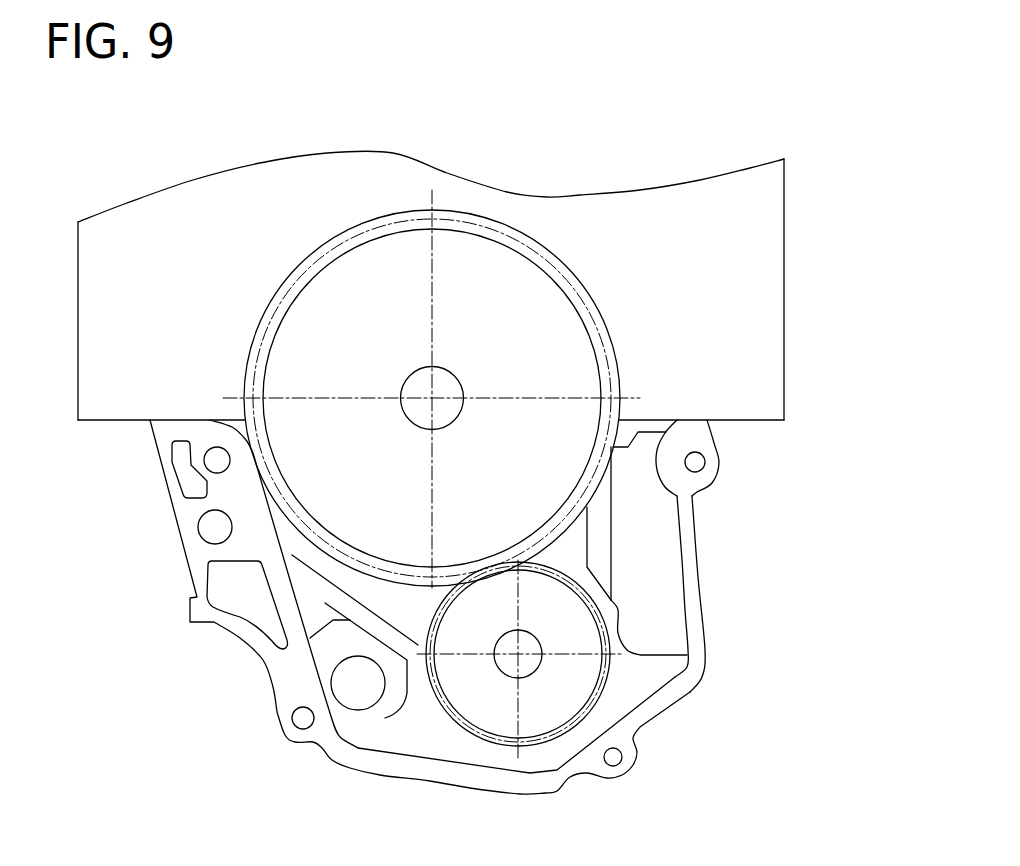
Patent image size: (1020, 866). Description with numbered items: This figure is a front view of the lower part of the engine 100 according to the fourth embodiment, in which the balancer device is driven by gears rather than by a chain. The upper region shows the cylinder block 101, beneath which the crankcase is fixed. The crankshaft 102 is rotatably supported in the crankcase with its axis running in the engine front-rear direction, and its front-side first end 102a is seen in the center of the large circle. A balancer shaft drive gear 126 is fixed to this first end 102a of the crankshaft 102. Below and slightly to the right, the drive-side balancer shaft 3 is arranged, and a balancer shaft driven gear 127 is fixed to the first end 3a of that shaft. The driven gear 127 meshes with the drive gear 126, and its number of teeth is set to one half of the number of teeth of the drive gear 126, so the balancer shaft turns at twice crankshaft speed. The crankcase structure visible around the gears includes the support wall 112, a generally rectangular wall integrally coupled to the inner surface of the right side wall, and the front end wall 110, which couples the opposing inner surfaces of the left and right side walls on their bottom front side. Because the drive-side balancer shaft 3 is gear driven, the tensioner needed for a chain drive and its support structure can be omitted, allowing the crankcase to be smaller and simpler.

The engine 100 is at (788, 250).
The cylinder block 101 is at (760, 335).
The crankshaft 102 is at (470, 386).
The first end 102a is at (442, 385).
The balancer shaft drive gear 126 is at (333, 300).
The support wall 112 is at (637, 510).
The balancer shaft driven gear 127 is at (587, 677).
The front end wall 110 is at (372, 780).
The drive-side balancer shaft 3 is at (495, 675).
The first end 3a is at (532, 664).